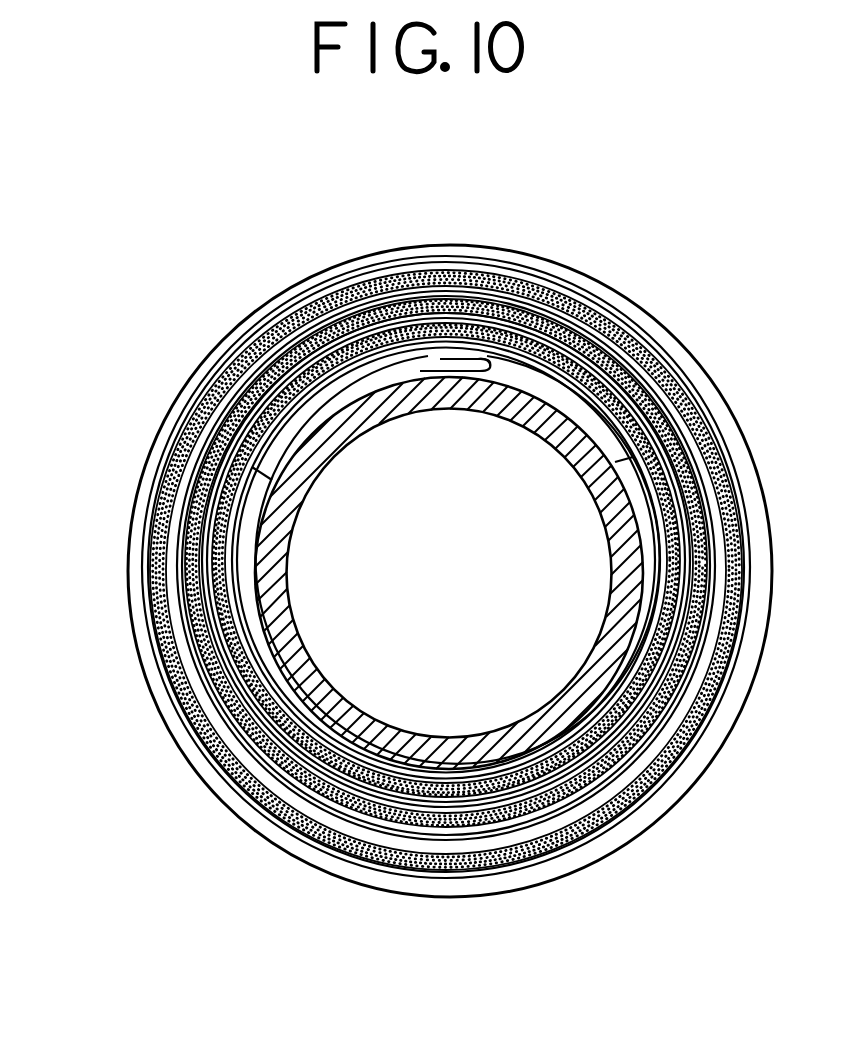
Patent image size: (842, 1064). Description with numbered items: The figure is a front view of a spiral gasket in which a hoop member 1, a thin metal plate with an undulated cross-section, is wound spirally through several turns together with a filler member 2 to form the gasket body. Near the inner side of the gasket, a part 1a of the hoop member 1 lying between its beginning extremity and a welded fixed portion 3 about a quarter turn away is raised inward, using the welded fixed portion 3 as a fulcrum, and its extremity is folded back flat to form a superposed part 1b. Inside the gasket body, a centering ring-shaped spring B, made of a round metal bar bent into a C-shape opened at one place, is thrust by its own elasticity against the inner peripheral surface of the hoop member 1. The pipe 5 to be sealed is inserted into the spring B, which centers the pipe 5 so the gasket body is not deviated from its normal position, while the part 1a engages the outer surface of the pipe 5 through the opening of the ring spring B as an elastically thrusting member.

The hoop member 1 is at (168, 417).
The part of the hoop member 1a is at (425, 372).
The superposed part 1b is at (480, 376).
The filler member 2 is at (162, 538).
The welded fixed portion 3 is at (358, 373).
The centering ring-shaped spring B is at (256, 569).
The pipe 5 is at (352, 712).